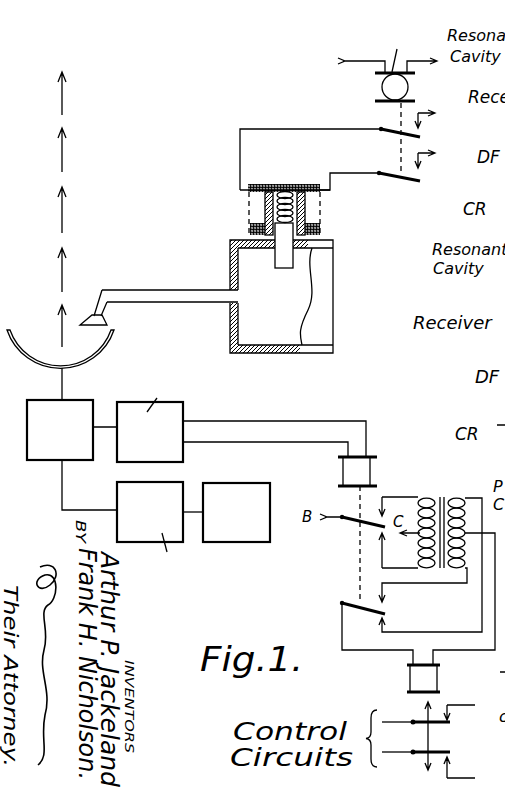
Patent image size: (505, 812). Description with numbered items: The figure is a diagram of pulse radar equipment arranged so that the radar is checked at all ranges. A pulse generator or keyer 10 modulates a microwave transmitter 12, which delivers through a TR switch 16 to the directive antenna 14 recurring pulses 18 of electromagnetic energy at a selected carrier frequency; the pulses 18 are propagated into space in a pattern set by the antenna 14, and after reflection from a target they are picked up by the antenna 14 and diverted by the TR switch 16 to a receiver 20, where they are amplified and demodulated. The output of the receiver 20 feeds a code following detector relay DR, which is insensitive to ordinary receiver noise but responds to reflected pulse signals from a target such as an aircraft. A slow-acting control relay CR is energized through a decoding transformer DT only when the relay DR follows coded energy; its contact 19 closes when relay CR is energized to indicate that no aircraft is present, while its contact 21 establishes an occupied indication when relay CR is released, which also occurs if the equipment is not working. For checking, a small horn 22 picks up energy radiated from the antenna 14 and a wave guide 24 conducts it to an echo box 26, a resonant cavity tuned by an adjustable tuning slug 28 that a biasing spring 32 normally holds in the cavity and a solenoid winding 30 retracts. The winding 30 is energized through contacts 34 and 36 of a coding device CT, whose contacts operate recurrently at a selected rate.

The keyer 10 is at (262, 533).
The microwave transmitter 12 is at (124, 495).
The directive antenna 14 is at (103, 348).
The TR switch 16 is at (50, 458).
The recurring pulses of electromagnetic energy 18 is at (65, 213).
The contact of relay CR 19 is at (443, 725).
The receiver 20 is at (172, 452).
The contact of relay CR 21 is at (417, 755).
The horn 22 is at (107, 320).
The wave guide 24 is at (173, 298).
The echo box 26 is at (333, 335).
The tuning slug 28 is at (283, 268).
The solenoid winding 30 is at (317, 223).
The biasing spring 32 is at (292, 188).
The contact of coding device 34 is at (397, 135).
The contact of coding device 36 is at (405, 180).
The coding device CT is at (383, 88).
The code following detector relay DR is at (348, 472).
The decoding transformer DT is at (437, 497).
The slow-acting control relay CR is at (417, 678).